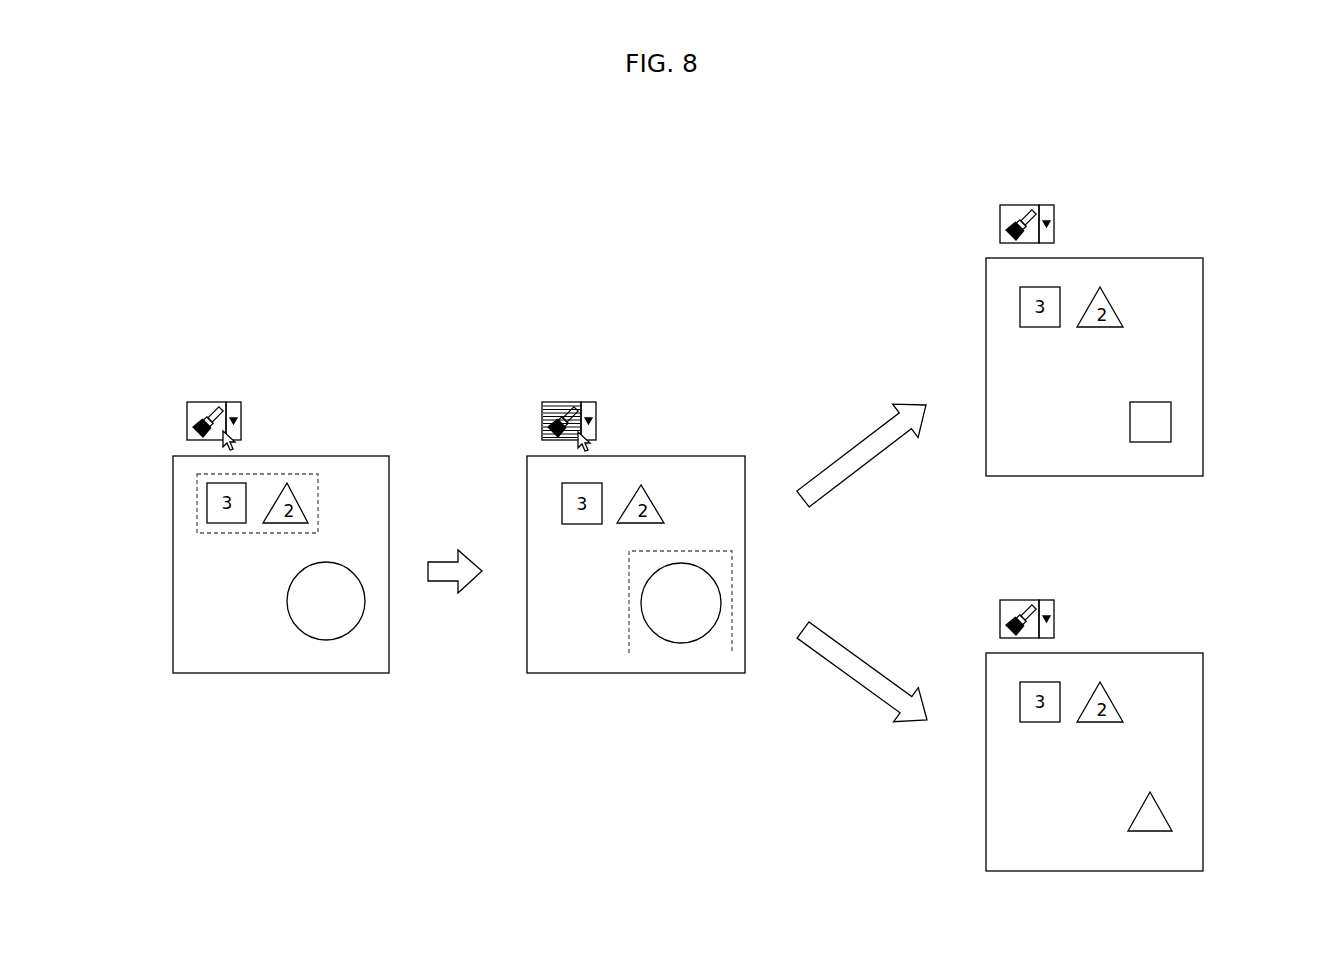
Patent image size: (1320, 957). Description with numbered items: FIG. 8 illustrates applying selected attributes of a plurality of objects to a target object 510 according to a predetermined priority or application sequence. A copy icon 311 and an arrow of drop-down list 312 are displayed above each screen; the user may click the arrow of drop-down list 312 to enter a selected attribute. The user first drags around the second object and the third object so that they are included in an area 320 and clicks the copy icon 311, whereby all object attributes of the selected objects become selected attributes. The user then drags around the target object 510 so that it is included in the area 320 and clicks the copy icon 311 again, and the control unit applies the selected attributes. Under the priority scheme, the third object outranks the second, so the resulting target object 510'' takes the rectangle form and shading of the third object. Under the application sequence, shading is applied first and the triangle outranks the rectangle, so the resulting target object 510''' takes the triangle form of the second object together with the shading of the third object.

The copy icon 311 is at (199, 401).
The arrow of drop-down list 312 is at (236, 401).
The area 320 is at (197, 503).
The target object 510 is at (504, 647).
The target object to which selected attributes are applied according to priority 510'' is at (1207, 422).
The target object to which selected attributes are applied according to application 510''' is at (1208, 811).